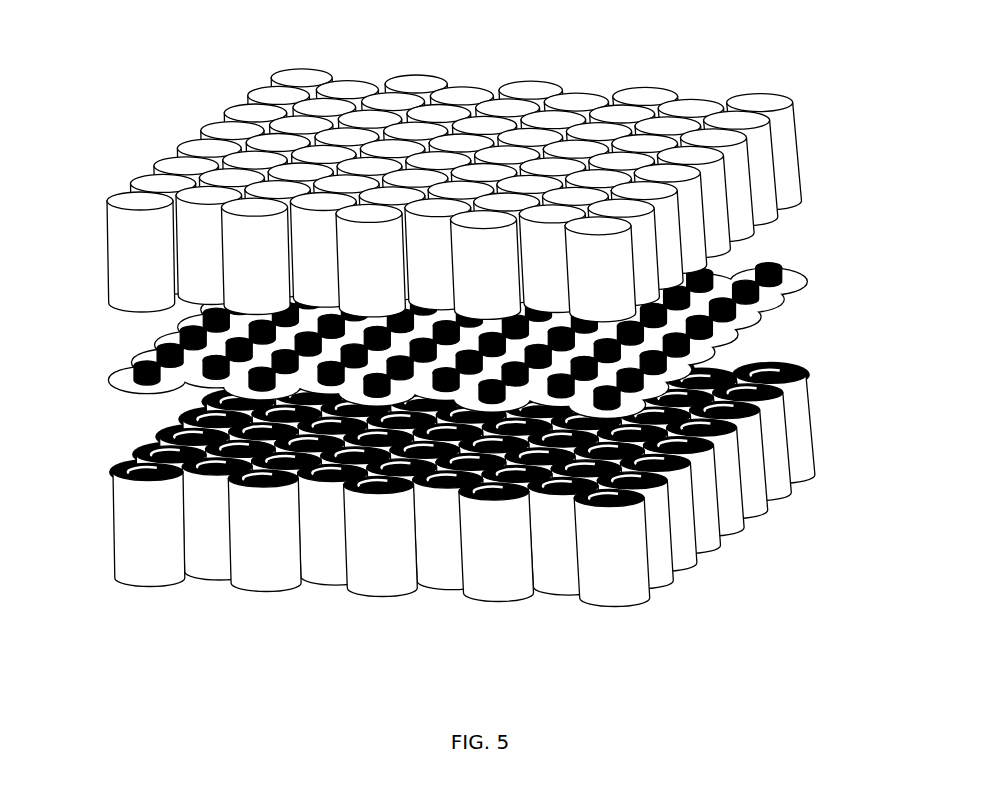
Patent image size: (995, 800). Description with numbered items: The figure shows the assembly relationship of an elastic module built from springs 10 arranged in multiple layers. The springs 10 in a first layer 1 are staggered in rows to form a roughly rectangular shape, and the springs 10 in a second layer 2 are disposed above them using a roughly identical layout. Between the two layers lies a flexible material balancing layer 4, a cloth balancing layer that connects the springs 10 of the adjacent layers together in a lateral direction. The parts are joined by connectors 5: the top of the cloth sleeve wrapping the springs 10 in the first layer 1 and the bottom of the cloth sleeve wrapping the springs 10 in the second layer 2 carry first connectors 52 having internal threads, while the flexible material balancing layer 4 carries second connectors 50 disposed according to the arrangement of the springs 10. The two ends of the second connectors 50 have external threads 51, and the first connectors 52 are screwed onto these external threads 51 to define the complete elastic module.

The first layer 1 is at (516, 453).
The second layer 2 is at (760, 183).
The flexible material balancing layer 4 is at (461, 335).
The connectors 5 is at (677, 475).
The spring 10 is at (145, 233).
The second connector 50 is at (778, 282).
The external thread 51 is at (133, 373).
The first connector 52 is at (787, 367).